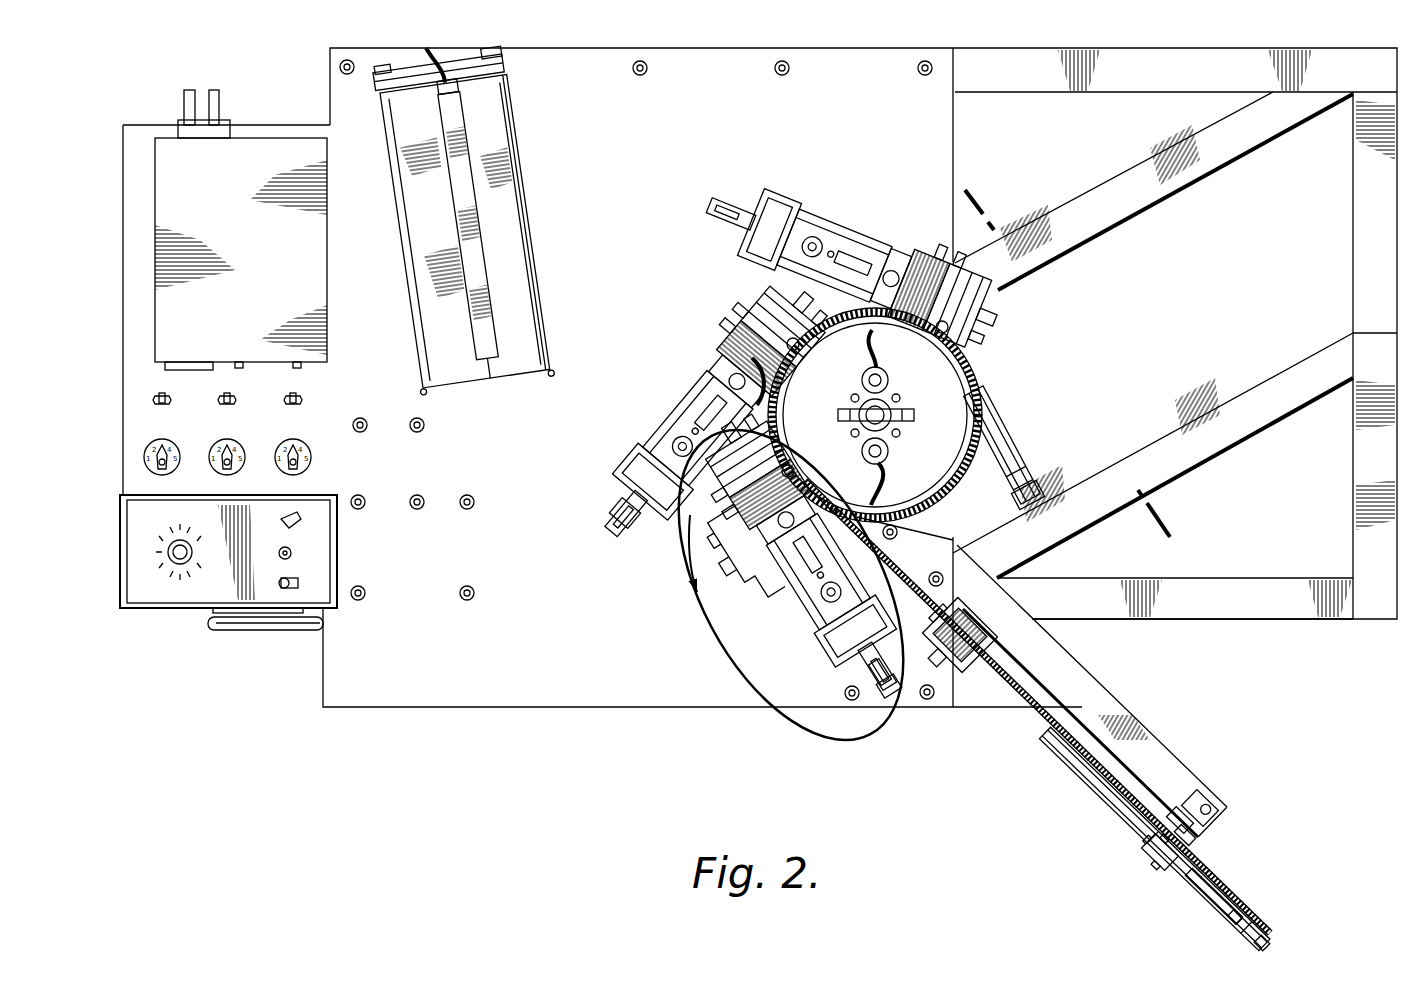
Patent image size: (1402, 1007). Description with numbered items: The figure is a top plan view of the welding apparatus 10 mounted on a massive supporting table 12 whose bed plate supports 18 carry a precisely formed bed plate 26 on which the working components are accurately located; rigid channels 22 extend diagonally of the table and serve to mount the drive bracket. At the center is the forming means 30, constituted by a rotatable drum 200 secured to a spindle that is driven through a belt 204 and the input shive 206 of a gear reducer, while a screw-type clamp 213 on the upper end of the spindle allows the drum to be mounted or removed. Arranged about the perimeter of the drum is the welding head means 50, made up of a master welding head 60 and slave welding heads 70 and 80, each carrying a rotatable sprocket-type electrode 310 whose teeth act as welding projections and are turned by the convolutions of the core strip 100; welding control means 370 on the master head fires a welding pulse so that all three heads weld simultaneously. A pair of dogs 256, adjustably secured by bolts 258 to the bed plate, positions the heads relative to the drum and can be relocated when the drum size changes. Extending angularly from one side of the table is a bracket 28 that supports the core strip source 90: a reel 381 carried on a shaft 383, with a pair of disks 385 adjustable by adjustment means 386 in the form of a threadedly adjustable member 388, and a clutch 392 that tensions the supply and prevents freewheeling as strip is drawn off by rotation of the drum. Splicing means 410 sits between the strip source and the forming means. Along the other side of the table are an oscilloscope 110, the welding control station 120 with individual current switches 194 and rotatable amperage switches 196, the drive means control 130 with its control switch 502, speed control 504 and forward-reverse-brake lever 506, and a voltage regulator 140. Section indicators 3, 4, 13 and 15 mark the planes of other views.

The section line 3- 3 is at (990, 204).
The section line 4- 4 is at (790, 705).
The welding apparatus 10 is at (1213, 648).
The supporting table 12 is at (1273, 625).
The section line 13- 13 is at (888, 324).
The section line 15- 15 is at (1002, 608).
The bed plate supports 18 is at (1248, 592).
The channels 22 is at (1183, 190).
The bed plate 26 is at (527, 444).
The bracket 28 is at (1153, 757).
The forming means 30 is at (982, 366).
The welding head means 50 is at (602, 530).
The master welding head 60 is at (787, 600).
The slave welding head 70 is at (715, 335).
The slave welding head 80 is at (884, 232).
The core strip source 90 is at (1072, 775).
The core strip 100 is at (1028, 724).
The oscilloscope 110 is at (530, 147).
The welding control station 120 is at (332, 349).
The drive means control 130 is at (253, 587).
The voltage regulator 140 is at (268, 632).
The control switches 194 is at (300, 401).
The rotatable switches 196 is at (300, 463).
The drum 200 is at (980, 388).
The belt 204 is at (1019, 478).
The input shive 206 is at (1008, 455).
The screw-type clamp 213 is at (907, 418).
The dogs 256 is at (884, 690).
The bolts 258 is at (877, 680).
The rotatable electrode 310 is at (798, 340).
The welding control means 370 is at (713, 510).
The reel 381 is at (1262, 913).
The shaft 383 is at (1188, 793).
The disks 385 is at (1233, 917).
The adjustment means 386 is at (1183, 840).
The threadedly adjustable member 388 is at (1177, 823).
The clutch 392 is at (1163, 860).
The splicing means 410 is at (1003, 651).
The control switch 502 is at (288, 588).
The speed control 504 is at (180, 562).
The control lever 506 is at (300, 520).